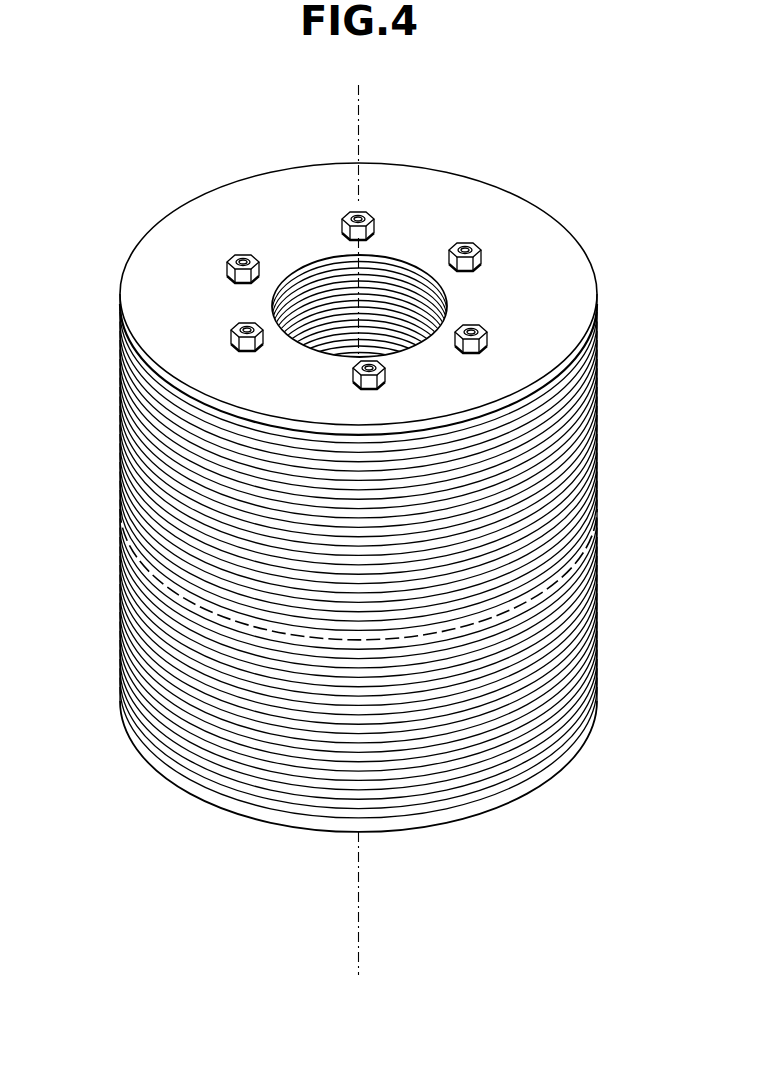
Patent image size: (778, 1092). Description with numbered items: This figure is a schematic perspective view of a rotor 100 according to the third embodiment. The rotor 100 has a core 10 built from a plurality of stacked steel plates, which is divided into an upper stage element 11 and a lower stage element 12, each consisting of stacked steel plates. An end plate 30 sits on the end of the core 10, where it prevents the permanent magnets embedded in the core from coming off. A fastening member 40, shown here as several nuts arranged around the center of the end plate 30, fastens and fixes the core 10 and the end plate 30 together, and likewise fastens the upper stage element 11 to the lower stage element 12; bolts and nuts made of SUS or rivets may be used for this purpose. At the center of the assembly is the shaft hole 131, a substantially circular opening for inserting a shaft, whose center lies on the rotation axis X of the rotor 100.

The rotor 100 is at (108, 149).
The core 10 is at (120, 422).
The upper stage element 11 is at (600, 312).
The lower stage element 12 is at (600, 505).
The end plate 30 is at (540, 262).
The shaft hole 131 is at (390, 254).
The fastening member 40 is at (356, 207).